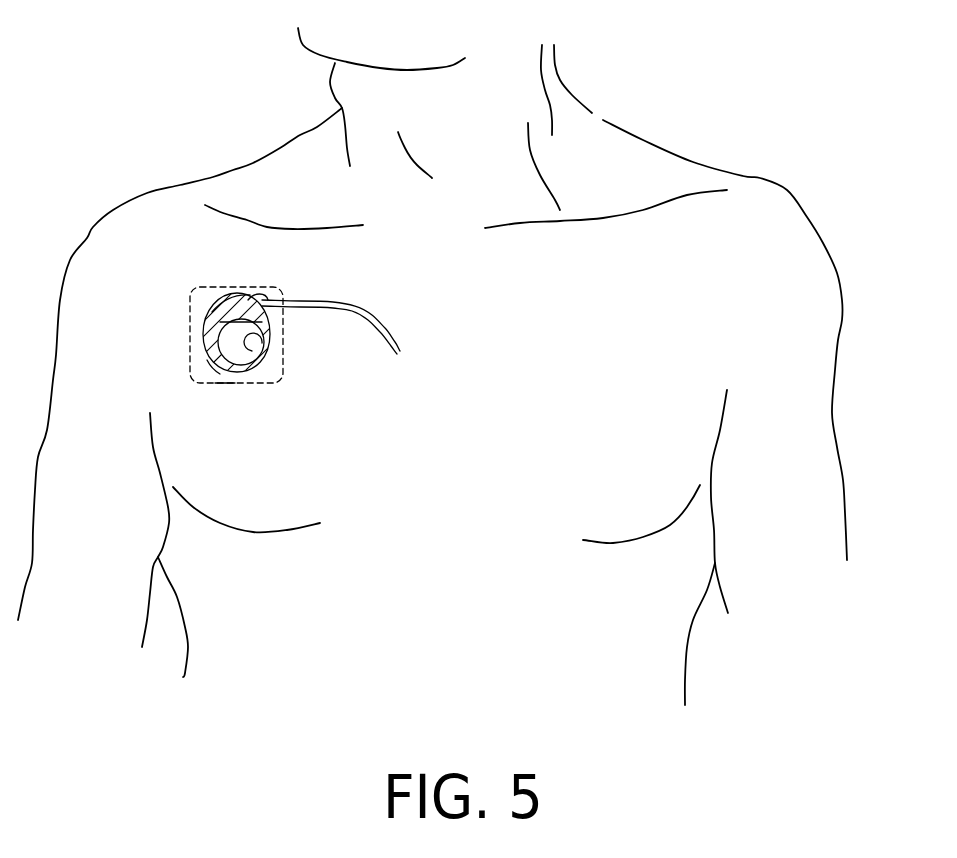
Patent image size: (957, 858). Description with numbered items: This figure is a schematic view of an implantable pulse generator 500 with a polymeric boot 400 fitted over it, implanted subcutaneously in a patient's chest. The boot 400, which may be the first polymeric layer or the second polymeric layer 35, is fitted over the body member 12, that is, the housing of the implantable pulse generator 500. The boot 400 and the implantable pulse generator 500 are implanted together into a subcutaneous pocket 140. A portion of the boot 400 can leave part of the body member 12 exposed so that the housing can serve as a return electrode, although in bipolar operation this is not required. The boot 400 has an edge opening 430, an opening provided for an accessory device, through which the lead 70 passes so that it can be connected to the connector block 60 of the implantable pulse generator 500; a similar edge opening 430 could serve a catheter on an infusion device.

The implantable pulse generator 500 is at (197, 302).
The boot 400 is at (203, 337).
The edge opening 430 is at (236, 285).
The second polymeric layer 35 is at (262, 343).
The connector block 60 is at (255, 288).
The lead 70 is at (376, 305).
The body member 12 is at (208, 375).
The subcutaneous pocket 140 is at (224, 387).